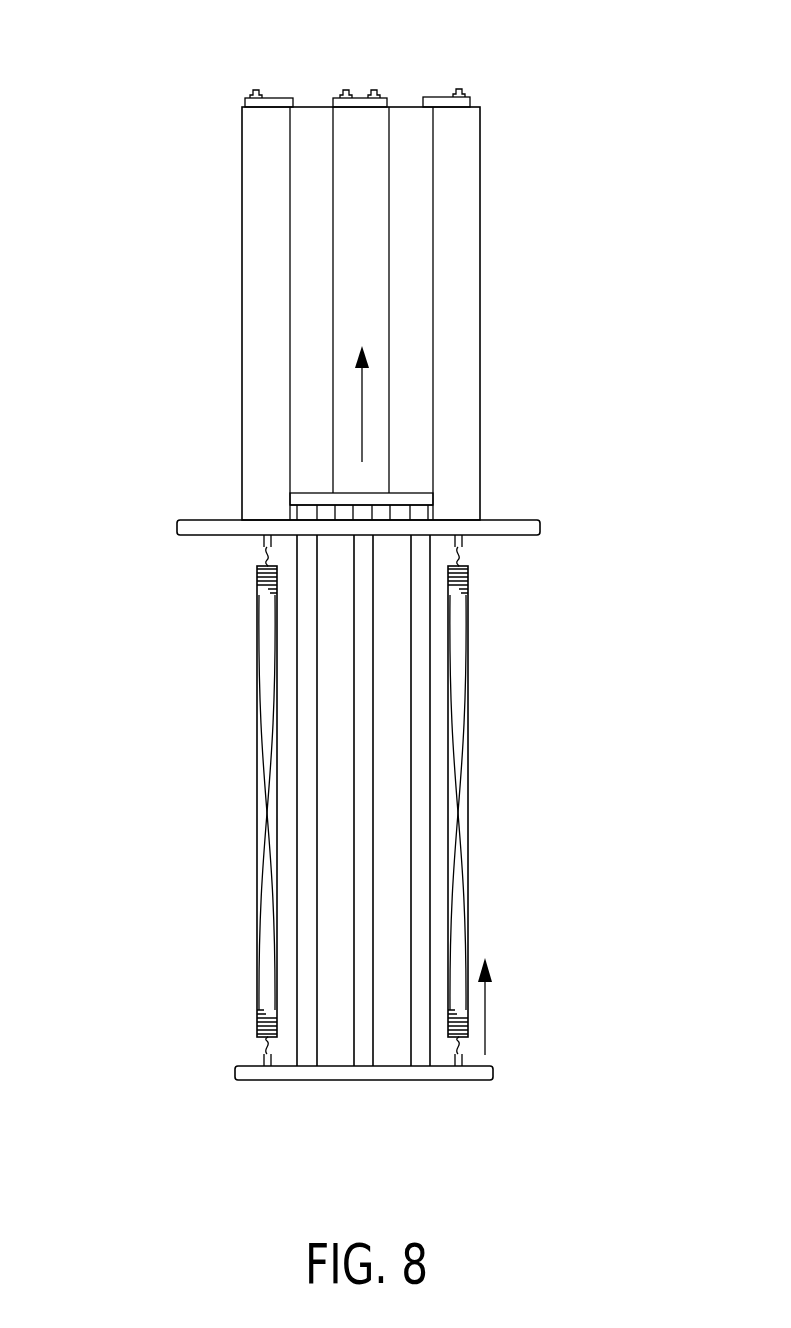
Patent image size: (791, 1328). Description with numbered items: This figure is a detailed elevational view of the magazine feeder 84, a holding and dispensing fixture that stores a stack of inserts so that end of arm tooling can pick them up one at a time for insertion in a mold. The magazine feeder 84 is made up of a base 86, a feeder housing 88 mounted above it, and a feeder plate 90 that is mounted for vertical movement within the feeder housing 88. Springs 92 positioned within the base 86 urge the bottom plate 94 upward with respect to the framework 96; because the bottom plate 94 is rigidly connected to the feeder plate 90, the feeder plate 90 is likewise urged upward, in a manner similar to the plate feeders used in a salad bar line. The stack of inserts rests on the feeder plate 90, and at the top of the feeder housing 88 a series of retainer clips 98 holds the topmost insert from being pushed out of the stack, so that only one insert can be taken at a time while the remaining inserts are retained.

The magazine feeder 84 is at (183, 453).
The base 86 is at (483, 825).
The feeder housing 88 is at (480, 252).
The feeder plate 90 is at (400, 492).
The springs 92 is at (263, 628).
The bottom plate 94 is at (415, 1080).
The framework 96 is at (545, 527).
The retainer clips 98 is at (273, 97).